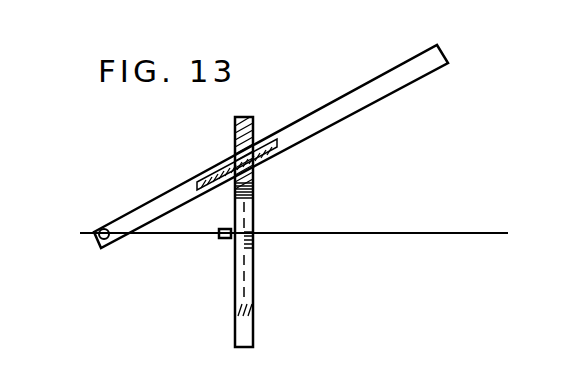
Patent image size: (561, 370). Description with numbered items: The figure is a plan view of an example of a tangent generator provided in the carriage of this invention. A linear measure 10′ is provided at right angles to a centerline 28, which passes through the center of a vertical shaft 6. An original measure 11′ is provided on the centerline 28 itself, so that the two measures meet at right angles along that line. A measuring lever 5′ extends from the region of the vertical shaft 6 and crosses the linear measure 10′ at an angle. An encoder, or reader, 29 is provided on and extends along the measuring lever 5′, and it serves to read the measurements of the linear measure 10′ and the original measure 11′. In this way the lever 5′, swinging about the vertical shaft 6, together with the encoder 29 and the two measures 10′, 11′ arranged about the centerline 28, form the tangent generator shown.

The measuring lever 5′ is at (395, 86).
The vertical shaft 6 is at (107, 240).
The linear measure 10′ is at (255, 190).
The original measure 11′ is at (220, 240).
The centerline 28 is at (414, 234).
The encoder 29 is at (215, 161).